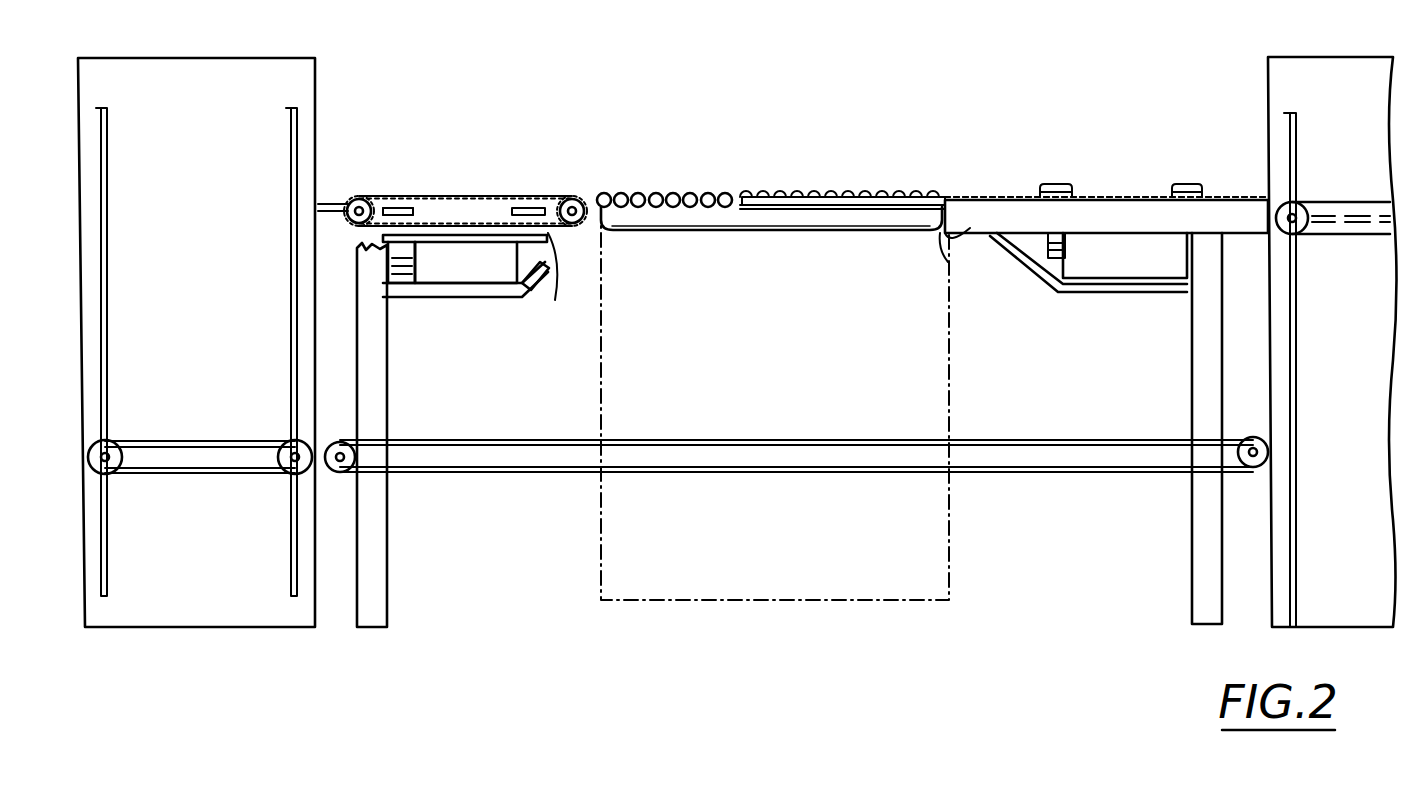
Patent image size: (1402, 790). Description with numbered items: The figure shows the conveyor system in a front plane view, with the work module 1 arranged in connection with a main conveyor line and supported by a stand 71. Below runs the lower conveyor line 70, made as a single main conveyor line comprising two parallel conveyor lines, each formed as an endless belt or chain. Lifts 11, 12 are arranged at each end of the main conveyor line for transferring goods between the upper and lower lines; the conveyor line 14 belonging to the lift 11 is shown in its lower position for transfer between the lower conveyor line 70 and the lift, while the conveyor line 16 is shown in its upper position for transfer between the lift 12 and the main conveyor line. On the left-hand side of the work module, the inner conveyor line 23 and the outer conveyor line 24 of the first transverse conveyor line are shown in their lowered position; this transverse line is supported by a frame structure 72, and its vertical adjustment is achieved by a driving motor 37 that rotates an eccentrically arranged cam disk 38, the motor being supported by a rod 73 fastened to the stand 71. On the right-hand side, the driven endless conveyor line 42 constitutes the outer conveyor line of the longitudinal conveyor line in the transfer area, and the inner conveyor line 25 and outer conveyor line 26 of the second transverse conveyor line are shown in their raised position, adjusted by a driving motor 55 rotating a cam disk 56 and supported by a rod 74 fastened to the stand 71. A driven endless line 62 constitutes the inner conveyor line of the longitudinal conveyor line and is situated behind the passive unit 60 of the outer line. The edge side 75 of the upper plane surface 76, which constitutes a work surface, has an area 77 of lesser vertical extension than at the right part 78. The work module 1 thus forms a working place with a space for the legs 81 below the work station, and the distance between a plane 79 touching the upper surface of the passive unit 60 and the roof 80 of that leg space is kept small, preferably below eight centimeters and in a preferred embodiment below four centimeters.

The work module 1 is at (1007, 127).
The lift 11 is at (182, 150).
The lift 12 is at (1330, 150).
The conveyor line 14 is at (215, 462).
The conveyor line 16 is at (1350, 236).
The inner conveyor line 23 is at (563, 232).
The outer conveyor line 24 is at (393, 208).
The inner conveyor line 25 is at (1054, 184).
The outer conveyor line 26 is at (1190, 184).
The driving motor 37 is at (487, 260).
The cam disk 38 is at (430, 256).
The driven endless conveyor line 42 is at (1150, 197).
The driving motor 55 is at (1128, 265).
The cam disk 56 is at (1045, 248).
The passive unit 60 is at (760, 193).
The driven endless line 62 is at (825, 232).
The lower conveyor line 70 is at (898, 455).
The stand 71 is at (1198, 318).
The frame structure 72 is at (555, 300).
The rod 73 is at (535, 282).
The rod 74 is at (1075, 290).
The edge side 75 is at (968, 222).
The upper plane surface 76 is at (890, 192).
The area 77 is at (811, 203).
The right part 78 is at (1122, 215).
The plane 79 is at (643, 196).
The roof 80 is at (785, 215).
The space for the legs 81 is at (912, 397).